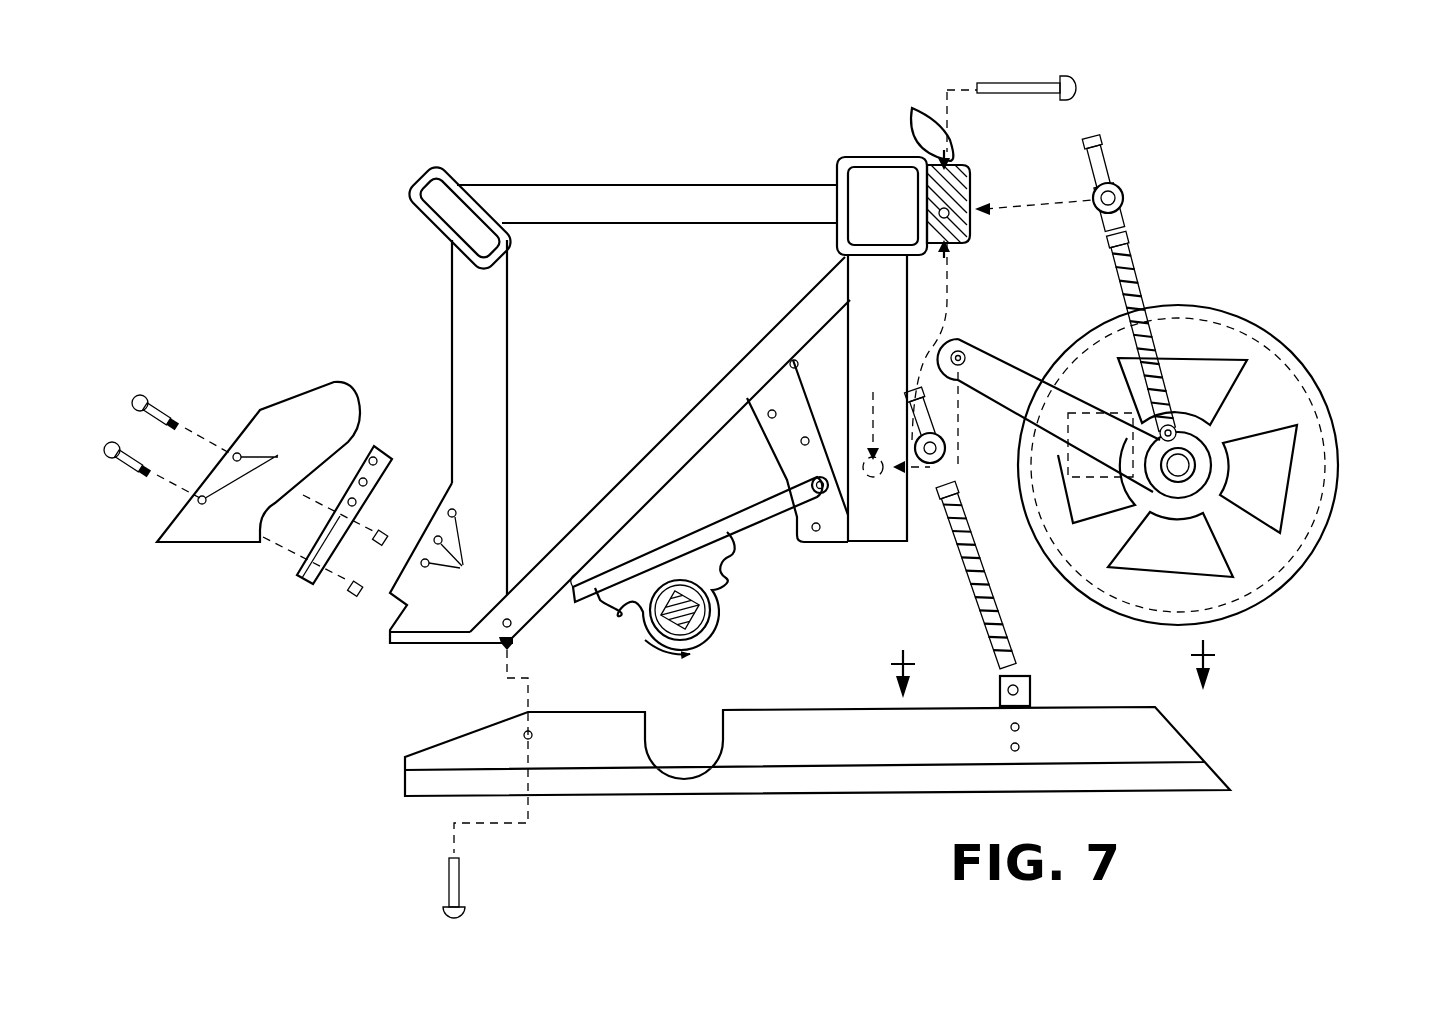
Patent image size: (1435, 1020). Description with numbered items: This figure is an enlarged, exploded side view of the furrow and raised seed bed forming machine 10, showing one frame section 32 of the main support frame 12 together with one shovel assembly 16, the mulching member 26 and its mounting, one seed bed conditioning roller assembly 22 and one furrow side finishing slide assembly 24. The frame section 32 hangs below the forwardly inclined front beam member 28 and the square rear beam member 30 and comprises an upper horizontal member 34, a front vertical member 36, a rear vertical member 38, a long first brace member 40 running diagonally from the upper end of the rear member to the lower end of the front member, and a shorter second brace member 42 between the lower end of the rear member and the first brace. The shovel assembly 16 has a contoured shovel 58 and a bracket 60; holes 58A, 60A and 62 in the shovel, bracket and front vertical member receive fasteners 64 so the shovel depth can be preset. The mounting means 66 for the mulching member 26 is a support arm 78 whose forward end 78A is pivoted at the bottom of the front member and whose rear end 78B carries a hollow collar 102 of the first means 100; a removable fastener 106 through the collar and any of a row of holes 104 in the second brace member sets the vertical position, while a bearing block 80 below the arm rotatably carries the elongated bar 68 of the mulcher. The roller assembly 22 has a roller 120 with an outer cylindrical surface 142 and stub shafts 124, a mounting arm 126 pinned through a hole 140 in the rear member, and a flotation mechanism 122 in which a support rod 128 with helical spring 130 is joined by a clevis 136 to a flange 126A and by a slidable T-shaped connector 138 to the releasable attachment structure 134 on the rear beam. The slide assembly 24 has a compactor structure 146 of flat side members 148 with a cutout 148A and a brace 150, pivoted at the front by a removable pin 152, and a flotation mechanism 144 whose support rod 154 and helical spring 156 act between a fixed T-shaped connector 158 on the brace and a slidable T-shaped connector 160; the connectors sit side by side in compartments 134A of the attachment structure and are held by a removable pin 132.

The irrigation furrow and raised seed bed forming machine 10 is at (1262, 168).
The main support frame 12 is at (674, 383).
The furrow and seed bed forming shovel assembly 16 is at (266, 476).
The seed bed conditioning roller assembly 22 is at (1161, 379).
The furrow side finishing slide assembly 24 is at (836, 784).
The mulching member 26 is at (715, 609).
The front beam member 28 is at (447, 175).
The rear beam member 30 is at (870, 158).
The frame section 32 is at (424, 282).
The upper horizontal member 34 is at (678, 203).
The front vertical member 36 is at (475, 330).
The rear vertical member 38 is at (893, 296).
The first brace member 40 is at (630, 473).
The second brace member 42 is at (787, 352).
The shovel 58 is at (258, 488).
The holes 58A is at (256, 465).
The bracket 60 is at (348, 503).
The holes 60A is at (383, 440).
The holes 62 is at (458, 548).
The fasteners 64 is at (143, 457).
The mounting means 66 is at (646, 529).
The elongated bar 68 is at (700, 632).
The support arm 78 is at (697, 566).
The forward end 78A is at (572, 575).
The rear end 78B is at (808, 543).
The bearing block 80 is at (735, 556).
The first means 100 is at (769, 451).
The hollow collar 102 is at (846, 505).
The holes 104 is at (805, 444).
The removable fastener 106 is at (829, 493).
The roller 120 is at (1201, 465).
The flotation mechanism 122 is at (1156, 287).
The stub shaft 124 is at (1185, 469).
The mounting arm 126 is at (1112, 402).
The flange 126A is at (1197, 447).
The support rod 128 is at (1148, 296).
The helical spring 130 is at (1163, 358).
The removable pin 132 is at (1076, 88).
The releasable attachment structure 134 is at (970, 175).
The compartments 134A is at (905, 120).
The clevis 136 is at (1147, 435).
The slidable T-shaped connector 138 is at (1122, 193).
The hole 140 is at (891, 419).
The outer cylindrical surface 142 is at (1325, 442).
The flotation mechanism 144 is at (996, 546).
The compactor structure 146 is at (1074, 704).
The longitudinal flat side member 148 is at (805, 711).
The cutout 148A is at (653, 740).
The brace 150 is at (990, 706).
The removable pin 152 is at (459, 878).
The support rod 154 is at (985, 562).
The helical spring 156 is at (952, 533).
The T-shaped connector 158 is at (1000, 690).
The slidable T-shaped connector 160 is at (945, 449).